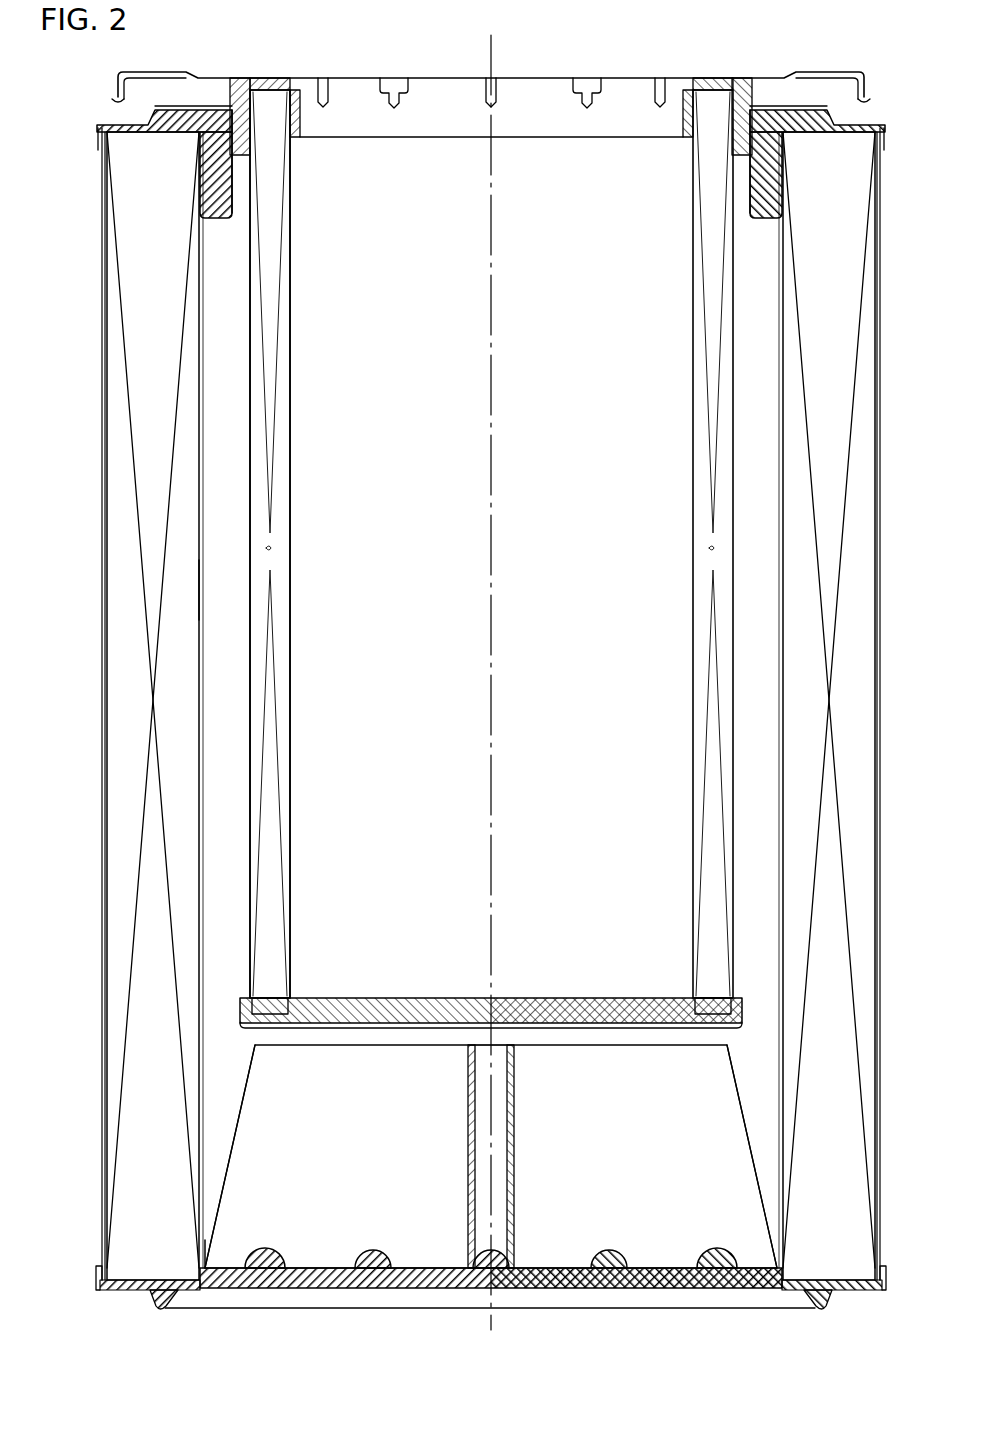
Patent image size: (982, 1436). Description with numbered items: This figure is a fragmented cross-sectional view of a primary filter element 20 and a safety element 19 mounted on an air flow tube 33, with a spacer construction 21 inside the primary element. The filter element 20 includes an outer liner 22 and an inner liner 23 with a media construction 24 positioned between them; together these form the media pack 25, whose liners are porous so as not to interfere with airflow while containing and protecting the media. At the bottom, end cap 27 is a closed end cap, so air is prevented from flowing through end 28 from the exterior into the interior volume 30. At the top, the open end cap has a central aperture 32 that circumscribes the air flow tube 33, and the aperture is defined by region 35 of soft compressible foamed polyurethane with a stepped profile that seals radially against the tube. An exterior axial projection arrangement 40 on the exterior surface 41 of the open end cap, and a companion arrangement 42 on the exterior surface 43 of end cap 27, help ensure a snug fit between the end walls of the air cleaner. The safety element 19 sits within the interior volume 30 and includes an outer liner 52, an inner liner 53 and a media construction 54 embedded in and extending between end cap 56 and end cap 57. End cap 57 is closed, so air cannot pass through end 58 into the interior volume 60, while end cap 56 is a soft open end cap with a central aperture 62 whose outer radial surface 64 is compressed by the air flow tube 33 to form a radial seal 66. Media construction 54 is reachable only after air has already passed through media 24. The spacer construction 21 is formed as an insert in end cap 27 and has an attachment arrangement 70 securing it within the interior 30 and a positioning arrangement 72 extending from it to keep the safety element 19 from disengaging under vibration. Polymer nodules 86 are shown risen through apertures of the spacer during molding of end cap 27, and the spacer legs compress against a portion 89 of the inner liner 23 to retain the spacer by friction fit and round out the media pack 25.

The safety element 19 is at (240, 668).
The filter element 20 is at (88, 247).
The spacer construction 21 is at (238, 1050).
The outer liner 22 is at (105, 438).
The inner liner 23 is at (205, 330).
The media construction 24 is at (113, 490).
The media pack 25 is at (98, 566).
The end cap 27 is at (256, 1290).
The end 28 is at (320, 1300).
The interior volume 30 is at (200, 576).
The central aperture 32 is at (217, 216).
The air flow tube 33 is at (745, 195).
The region 35 is at (228, 178).
The exterior axial projection arrangement 40 is at (180, 108).
The exterior surface 41 is at (117, 125).
The companion arrangement 42 is at (165, 1304).
The exterior surface 43 is at (118, 1292).
The outer liner 52 is at (247, 480).
The inner liner 53 is at (288, 500).
The media construction 54 is at (280, 437).
The end cap 56 is at (257, 86).
The end cap 57 is at (378, 1005).
The end 58 is at (410, 1025).
The interior volume 60 is at (290, 725).
The central aperture 62 is at (298, 118).
The outer radial surface 64 is at (232, 100).
The radial seal 66 is at (750, 106).
The attachment arrangement 70 is at (253, 1233).
The positioning arrangement 72 is at (752, 1075).
The polymer nodules 86 is at (272, 1252).
The portion 89 is at (202, 1266).